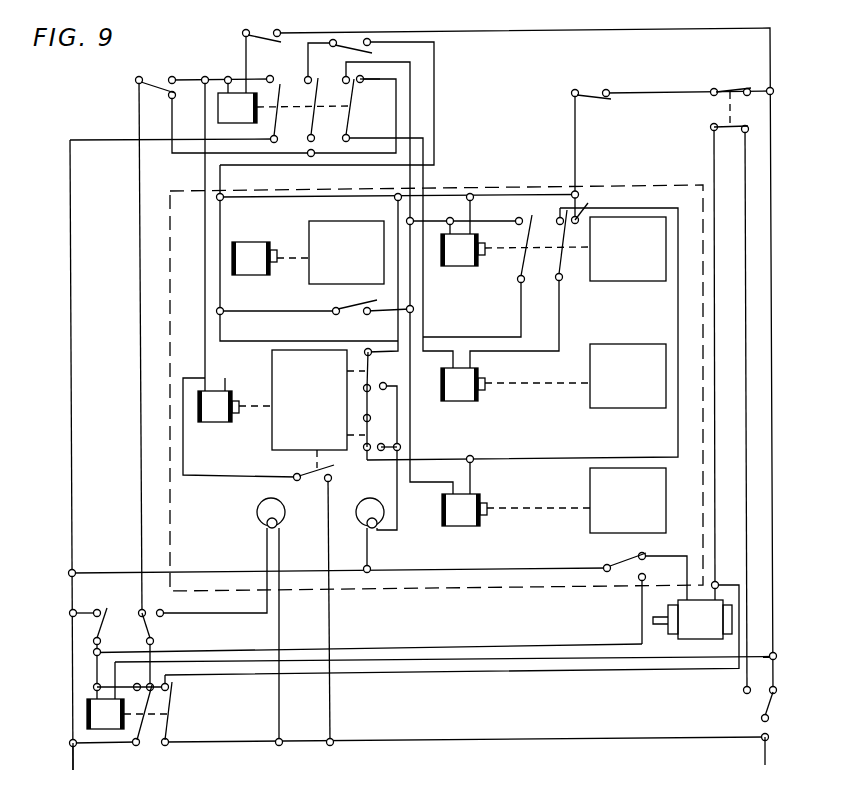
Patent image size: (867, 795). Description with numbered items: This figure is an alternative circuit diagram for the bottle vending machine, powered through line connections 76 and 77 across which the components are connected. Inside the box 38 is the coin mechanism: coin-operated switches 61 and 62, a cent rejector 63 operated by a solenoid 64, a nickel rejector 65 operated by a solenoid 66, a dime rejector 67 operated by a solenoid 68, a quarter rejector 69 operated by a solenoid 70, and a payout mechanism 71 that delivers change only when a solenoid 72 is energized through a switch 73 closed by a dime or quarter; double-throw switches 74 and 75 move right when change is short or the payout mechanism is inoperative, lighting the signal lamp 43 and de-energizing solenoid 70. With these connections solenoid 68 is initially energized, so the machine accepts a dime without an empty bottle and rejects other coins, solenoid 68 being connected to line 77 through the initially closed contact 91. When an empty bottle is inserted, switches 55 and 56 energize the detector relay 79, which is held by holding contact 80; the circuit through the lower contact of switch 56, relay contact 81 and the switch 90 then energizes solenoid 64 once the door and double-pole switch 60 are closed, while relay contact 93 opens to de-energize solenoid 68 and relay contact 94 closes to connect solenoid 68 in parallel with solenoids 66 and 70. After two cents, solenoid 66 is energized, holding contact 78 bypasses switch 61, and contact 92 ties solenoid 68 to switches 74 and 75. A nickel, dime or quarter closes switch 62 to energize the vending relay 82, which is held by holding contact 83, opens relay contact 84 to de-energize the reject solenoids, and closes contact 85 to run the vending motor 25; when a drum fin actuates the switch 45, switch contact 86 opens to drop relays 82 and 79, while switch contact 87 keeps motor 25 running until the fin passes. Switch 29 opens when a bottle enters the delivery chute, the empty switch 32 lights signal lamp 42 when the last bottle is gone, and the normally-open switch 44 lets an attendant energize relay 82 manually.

The vending motor 25 is at (692, 629).
The switch 29 is at (592, 85).
The empty switch 32 is at (157, 627).
The box 38 is at (436, 377).
The signal lamp 42 is at (255, 513).
The signal lamp 43 is at (374, 504).
The normally-open switch 44 is at (114, 626).
The switch 45 is at (750, 709).
The switch 55 is at (262, 26).
The switch 56 is at (156, 79).
The double-pole switch 60 is at (731, 101).
The coin-operated switch 61 is at (355, 302).
The coin-operated switch 62 is at (618, 560).
The cent rejector 63 is at (346, 243).
The solenoid 64 is at (254, 269).
The nickel rejector 65 is at (628, 259).
The solenoid 66 is at (463, 261).
The dime rejector 67 is at (628, 387).
The solenoid 68 is at (463, 395).
The quarter rejector 69 is at (644, 500).
The solenoid 70 is at (464, 520).
The payout mechanism 71 is at (294, 405).
The solenoid 72 is at (214, 418).
The switch 73 is at (312, 482).
The double-throw switch 74 is at (384, 370).
The double-throw switch 75 is at (382, 419).
The connection 76 is at (58, 755).
The connection 77 is at (781, 750).
The holding contact 78 is at (514, 240).
The relay 79 is at (237, 116).
The holding contact 80 is at (266, 100).
The relay contact 81 is at (321, 98).
The vending relay 82 is at (111, 732).
The holding contact 83 is at (130, 678).
The relay contact 84 is at (172, 689).
The contact 85 is at (185, 714).
The switch contact 86 is at (788, 689).
The switch contact 87 is at (727, 696).
The switch 90 is at (351, 31).
The contact 91 is at (592, 205).
The contact 92 is at (551, 239).
The relay contact 93 is at (372, 89).
The relay contact 94 is at (340, 109).